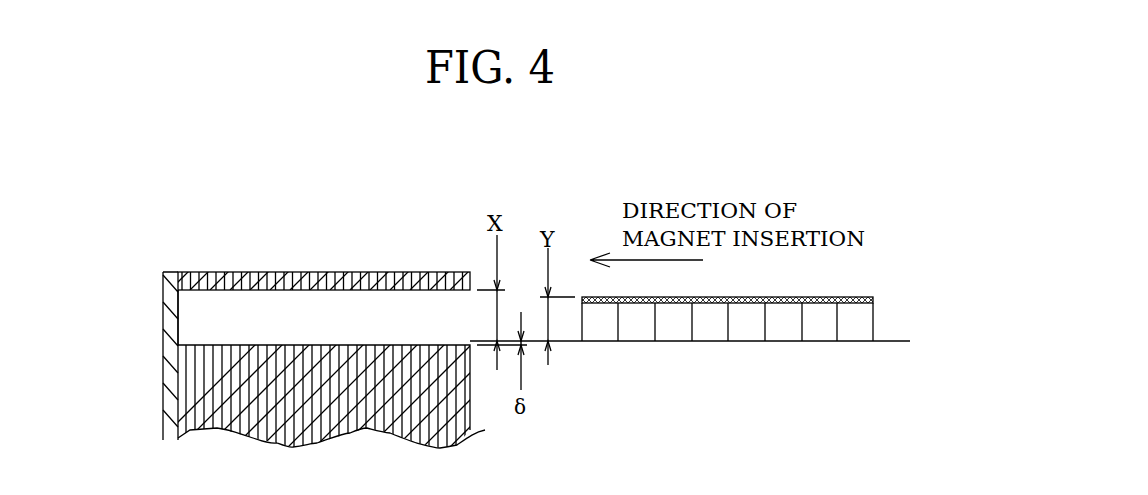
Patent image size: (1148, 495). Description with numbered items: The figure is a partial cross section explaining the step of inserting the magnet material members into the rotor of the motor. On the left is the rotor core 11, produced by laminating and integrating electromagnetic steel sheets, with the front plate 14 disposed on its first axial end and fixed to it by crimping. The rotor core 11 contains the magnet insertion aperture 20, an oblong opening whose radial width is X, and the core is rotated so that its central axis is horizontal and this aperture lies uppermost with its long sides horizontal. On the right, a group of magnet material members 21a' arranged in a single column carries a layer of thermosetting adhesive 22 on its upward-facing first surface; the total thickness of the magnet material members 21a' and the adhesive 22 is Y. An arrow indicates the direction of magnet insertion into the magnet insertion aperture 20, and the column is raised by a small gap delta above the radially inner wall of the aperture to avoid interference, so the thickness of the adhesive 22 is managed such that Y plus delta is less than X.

The rotor core 11 is at (221, 272).
The front plate 14 is at (170, 397).
The magnet insertion aperture 20 is at (198, 320).
The magnet material member 21a' is at (727, 354).
The adhesive 22 is at (730, 302).